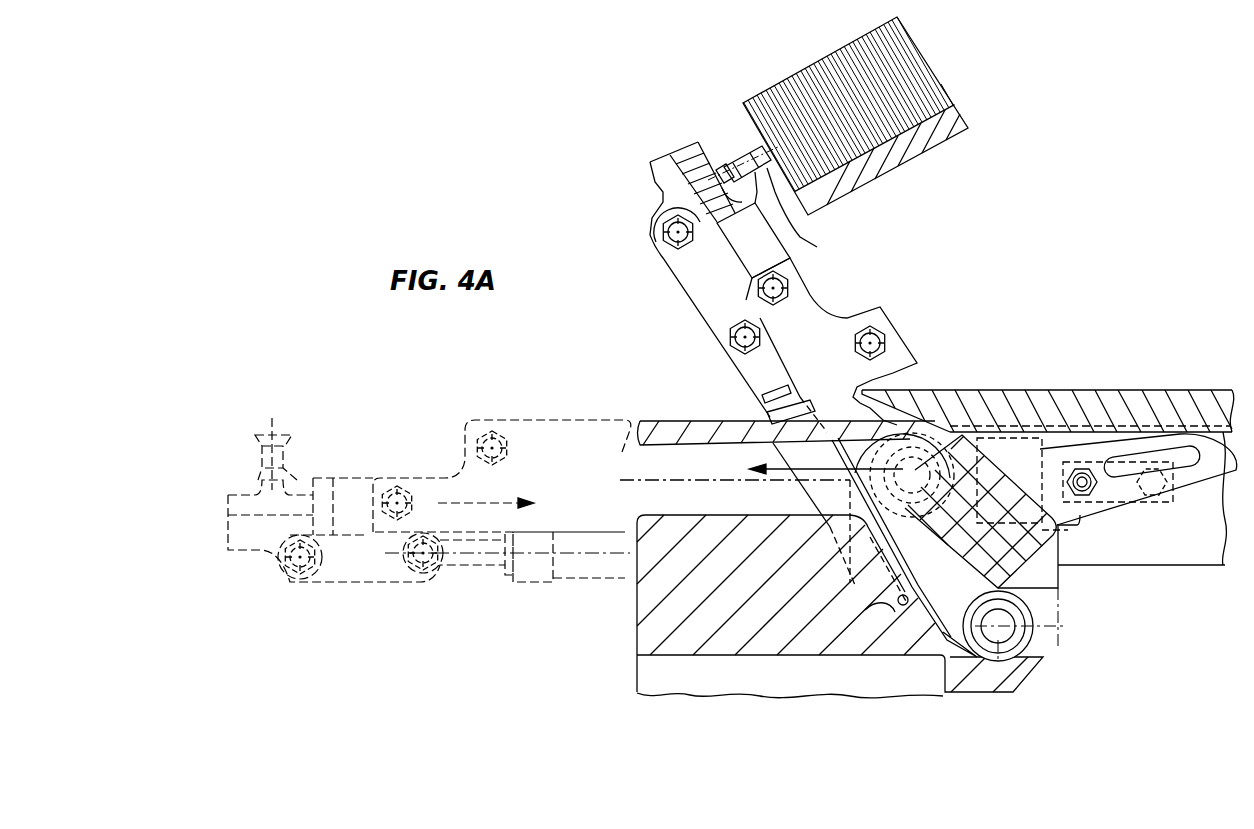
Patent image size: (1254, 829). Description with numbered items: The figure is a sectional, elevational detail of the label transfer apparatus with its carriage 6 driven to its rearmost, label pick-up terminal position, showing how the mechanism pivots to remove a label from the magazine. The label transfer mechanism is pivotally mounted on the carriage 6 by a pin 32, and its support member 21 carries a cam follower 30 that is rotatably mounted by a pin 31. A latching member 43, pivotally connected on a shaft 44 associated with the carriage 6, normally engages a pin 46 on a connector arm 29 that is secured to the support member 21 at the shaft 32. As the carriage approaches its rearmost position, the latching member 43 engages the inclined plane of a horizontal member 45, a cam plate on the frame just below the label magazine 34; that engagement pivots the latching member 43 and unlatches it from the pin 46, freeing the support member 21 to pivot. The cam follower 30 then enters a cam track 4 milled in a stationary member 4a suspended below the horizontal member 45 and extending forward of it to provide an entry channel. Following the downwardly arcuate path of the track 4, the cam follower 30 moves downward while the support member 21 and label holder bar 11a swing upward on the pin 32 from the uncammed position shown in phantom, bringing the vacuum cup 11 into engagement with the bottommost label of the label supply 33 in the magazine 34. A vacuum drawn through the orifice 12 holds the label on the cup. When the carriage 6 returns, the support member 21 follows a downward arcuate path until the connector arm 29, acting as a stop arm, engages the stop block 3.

The stop block 3 is at (1013, 442).
The cam track 4 is at (700, 514).
The stationary member 4a is at (665, 626).
The carriage 6 is at (1068, 563).
The vacuum cup 11 is at (812, 249).
The label holder bar 11a is at (696, 152).
The orifice 12 is at (742, 150).
The support member 21 is at (887, 332).
The connector arm 29 is at (880, 608).
The cam follower 30 is at (1030, 622).
The pin 31 is at (998, 635).
The pin 32 is at (761, 470).
The labels 33 is at (806, 84).
The label magazine 34 is at (887, 170).
The latching member 43 is at (1217, 472).
The shaft 44 is at (1083, 490).
The horizontal member 45 is at (1107, 393).
The pin 46 is at (901, 606).